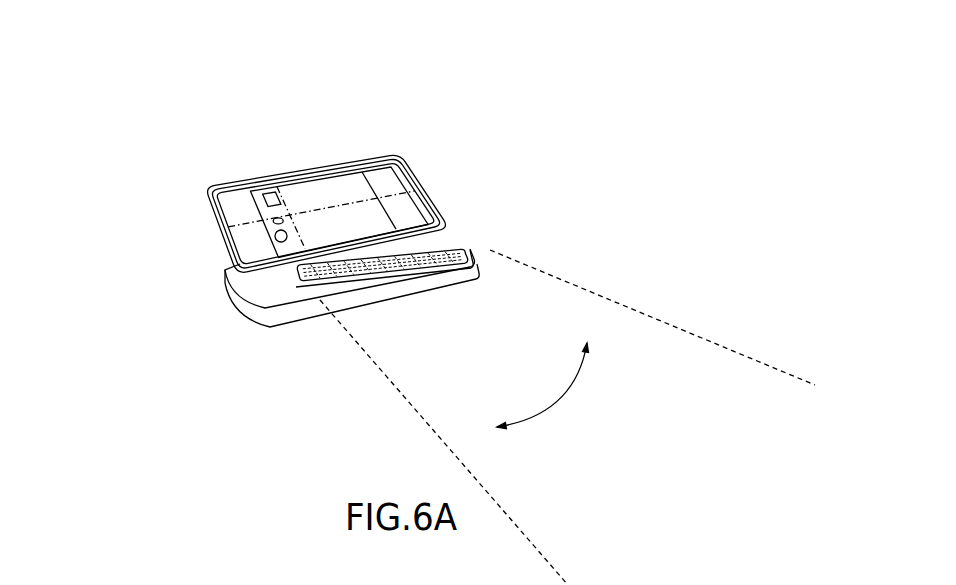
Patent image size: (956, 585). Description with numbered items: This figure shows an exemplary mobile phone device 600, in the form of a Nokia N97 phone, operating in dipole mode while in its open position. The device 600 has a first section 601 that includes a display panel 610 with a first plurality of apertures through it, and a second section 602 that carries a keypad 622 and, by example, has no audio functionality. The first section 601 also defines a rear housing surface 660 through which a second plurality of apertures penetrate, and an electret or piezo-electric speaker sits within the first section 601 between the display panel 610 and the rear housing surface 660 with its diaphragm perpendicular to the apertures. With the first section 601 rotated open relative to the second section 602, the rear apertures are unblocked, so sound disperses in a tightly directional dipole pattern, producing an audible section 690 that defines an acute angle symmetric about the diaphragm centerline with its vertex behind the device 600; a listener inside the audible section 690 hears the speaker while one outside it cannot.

The mobile phone device 600 is at (555, 107).
The first section 601 is at (215, 245).
The second section 602 is at (285, 317).
The display panel 610 is at (340, 212).
The keypad 622 is at (457, 252).
The rear housing surface 660 is at (200, 188).
The audible section 690 is at (567, 417).